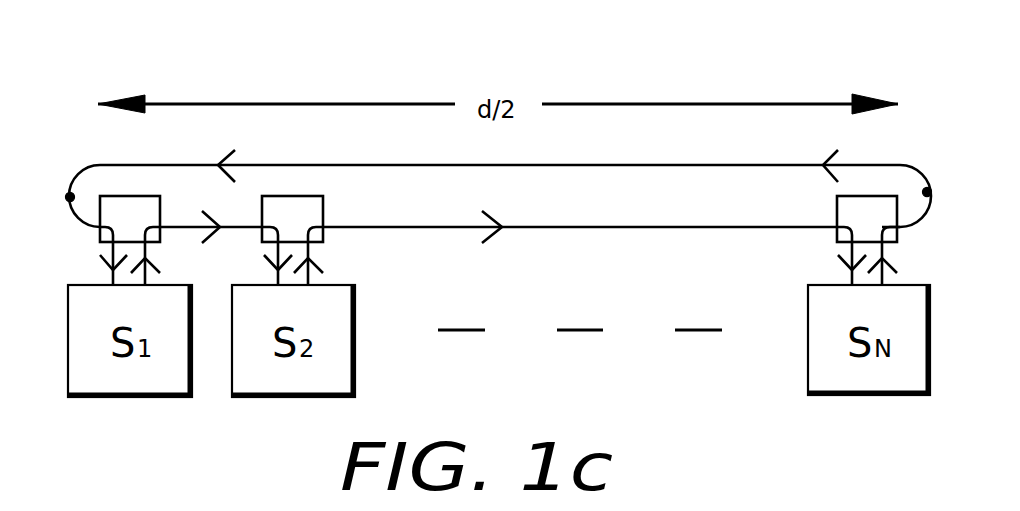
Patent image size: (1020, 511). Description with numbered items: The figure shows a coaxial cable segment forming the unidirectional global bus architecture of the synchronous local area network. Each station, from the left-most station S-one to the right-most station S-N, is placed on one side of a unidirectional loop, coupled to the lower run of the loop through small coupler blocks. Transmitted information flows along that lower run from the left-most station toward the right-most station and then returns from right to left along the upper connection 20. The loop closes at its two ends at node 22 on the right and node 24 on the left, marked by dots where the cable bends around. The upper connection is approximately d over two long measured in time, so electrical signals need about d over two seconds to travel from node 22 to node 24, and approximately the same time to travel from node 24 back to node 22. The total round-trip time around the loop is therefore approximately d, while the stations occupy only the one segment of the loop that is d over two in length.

The upper connection 20 is at (677, 165).
The node 22 is at (927, 192).
The node 24 is at (70, 197).